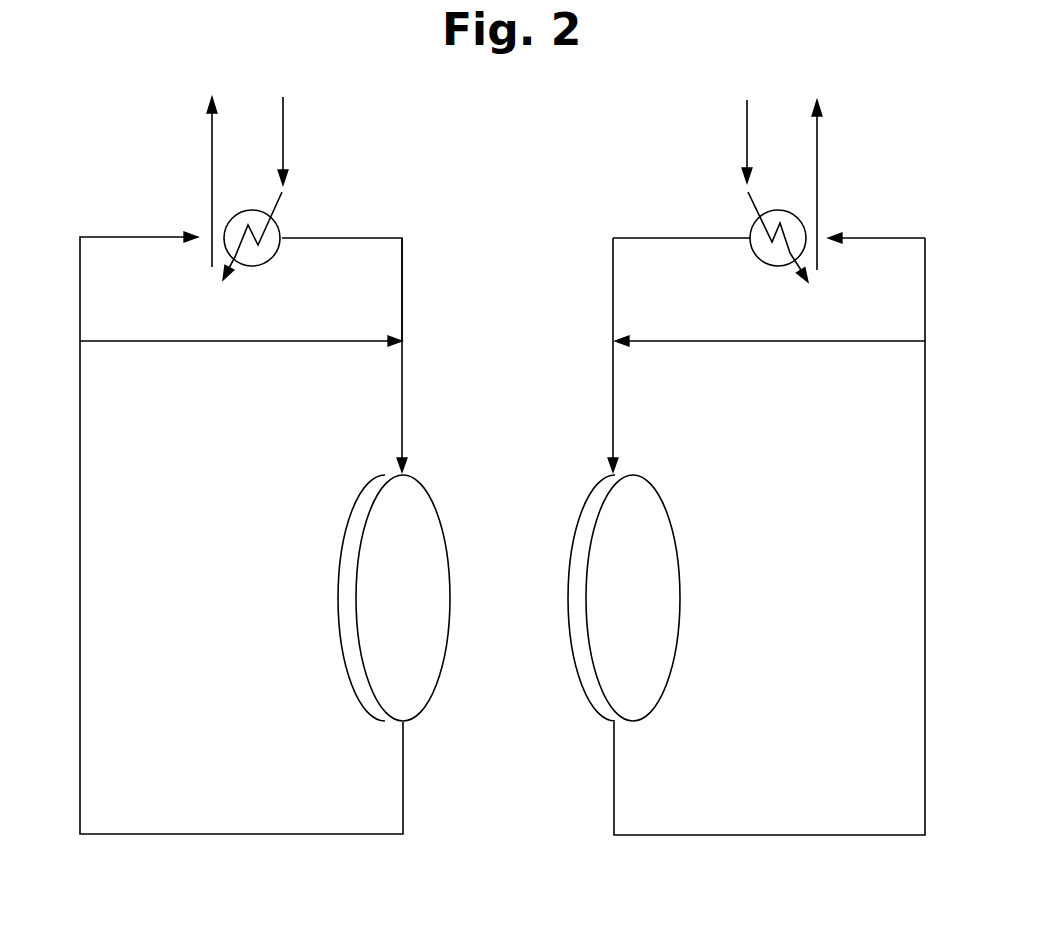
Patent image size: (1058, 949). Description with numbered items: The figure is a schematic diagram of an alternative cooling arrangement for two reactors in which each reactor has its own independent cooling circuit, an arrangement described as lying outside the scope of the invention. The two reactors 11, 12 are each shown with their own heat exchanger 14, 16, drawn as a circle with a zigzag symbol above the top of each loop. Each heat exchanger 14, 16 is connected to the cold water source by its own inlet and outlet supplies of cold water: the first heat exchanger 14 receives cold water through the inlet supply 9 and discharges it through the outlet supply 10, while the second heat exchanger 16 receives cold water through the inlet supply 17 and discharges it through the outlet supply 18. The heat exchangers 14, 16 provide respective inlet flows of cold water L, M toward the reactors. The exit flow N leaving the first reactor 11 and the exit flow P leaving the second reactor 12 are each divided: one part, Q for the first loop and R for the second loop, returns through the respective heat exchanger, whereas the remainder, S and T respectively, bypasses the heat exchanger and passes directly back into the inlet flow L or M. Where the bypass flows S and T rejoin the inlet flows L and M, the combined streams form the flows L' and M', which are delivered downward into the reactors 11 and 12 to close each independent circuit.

The cold water inlet supply 9 is at (283, 132).
The cold water outlet supply 10 is at (210, 138).
The reactor 11 is at (422, 713).
The reactor 12 is at (582, 693).
The heat exchanger 14 is at (277, 232).
The heat exchanger 16 is at (748, 232).
The cold water inlet supply 17 is at (747, 142).
The cold water outlet supply 18 is at (817, 140).
The returning part of exit flow Q is at (140, 233).
The returning part of exit flow R is at (880, 237).
The bypass flow S is at (232, 343).
The bypass flow T is at (782, 342).
The inlet flow of cold water L is at (447, 289).
The combined inlet flow L' is at (450, 406).
The inlet flow of cold water M is at (562, 289).
The combined inlet flow M' is at (562, 406).
The exit flow N is at (242, 835).
The exit flow P is at (775, 837).